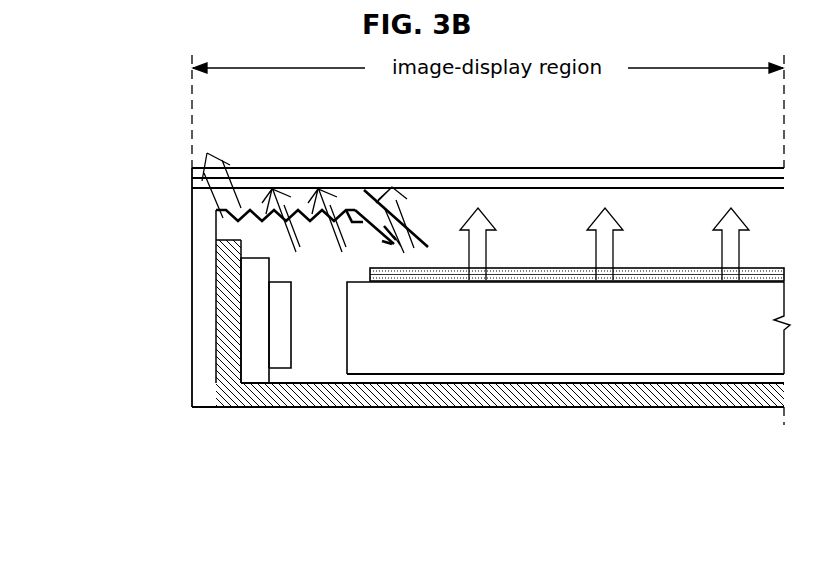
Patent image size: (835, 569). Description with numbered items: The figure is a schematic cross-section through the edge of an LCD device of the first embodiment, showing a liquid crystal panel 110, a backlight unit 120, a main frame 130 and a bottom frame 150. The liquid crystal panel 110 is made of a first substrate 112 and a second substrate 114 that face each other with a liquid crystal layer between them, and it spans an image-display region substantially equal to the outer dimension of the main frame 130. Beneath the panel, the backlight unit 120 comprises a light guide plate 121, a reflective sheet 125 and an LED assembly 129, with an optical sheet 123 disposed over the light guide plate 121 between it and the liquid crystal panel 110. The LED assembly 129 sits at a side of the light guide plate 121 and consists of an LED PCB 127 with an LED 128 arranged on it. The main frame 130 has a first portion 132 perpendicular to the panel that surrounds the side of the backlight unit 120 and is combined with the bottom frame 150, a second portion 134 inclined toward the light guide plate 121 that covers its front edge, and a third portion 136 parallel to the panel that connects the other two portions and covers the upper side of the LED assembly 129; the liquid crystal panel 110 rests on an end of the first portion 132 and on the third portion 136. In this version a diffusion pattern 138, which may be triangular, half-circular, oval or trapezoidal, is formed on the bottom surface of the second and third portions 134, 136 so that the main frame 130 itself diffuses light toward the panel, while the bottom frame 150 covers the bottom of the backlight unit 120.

The liquid crystal panel 110 is at (661, 111).
The first substrate 112 is at (643, 184).
The second substrate 114 is at (595, 173).
The backlight unit 120 is at (503, 380).
The light guide plate 121 is at (397, 340).
The optical sheet 123 is at (577, 375).
The reflective sheet 125 is at (473, 378).
The LED PCB 127 is at (257, 348).
The LED 128 is at (282, 348).
The LED assembly 129 is at (272, 382).
The main frame 130 is at (407, 261).
The first portion 132 is at (202, 326).
The second portion 134 is at (377, 240).
The third portion 136 is at (237, 222).
The diffusion pattern 138 is at (343, 208).
The bottom frame 150 is at (630, 395).